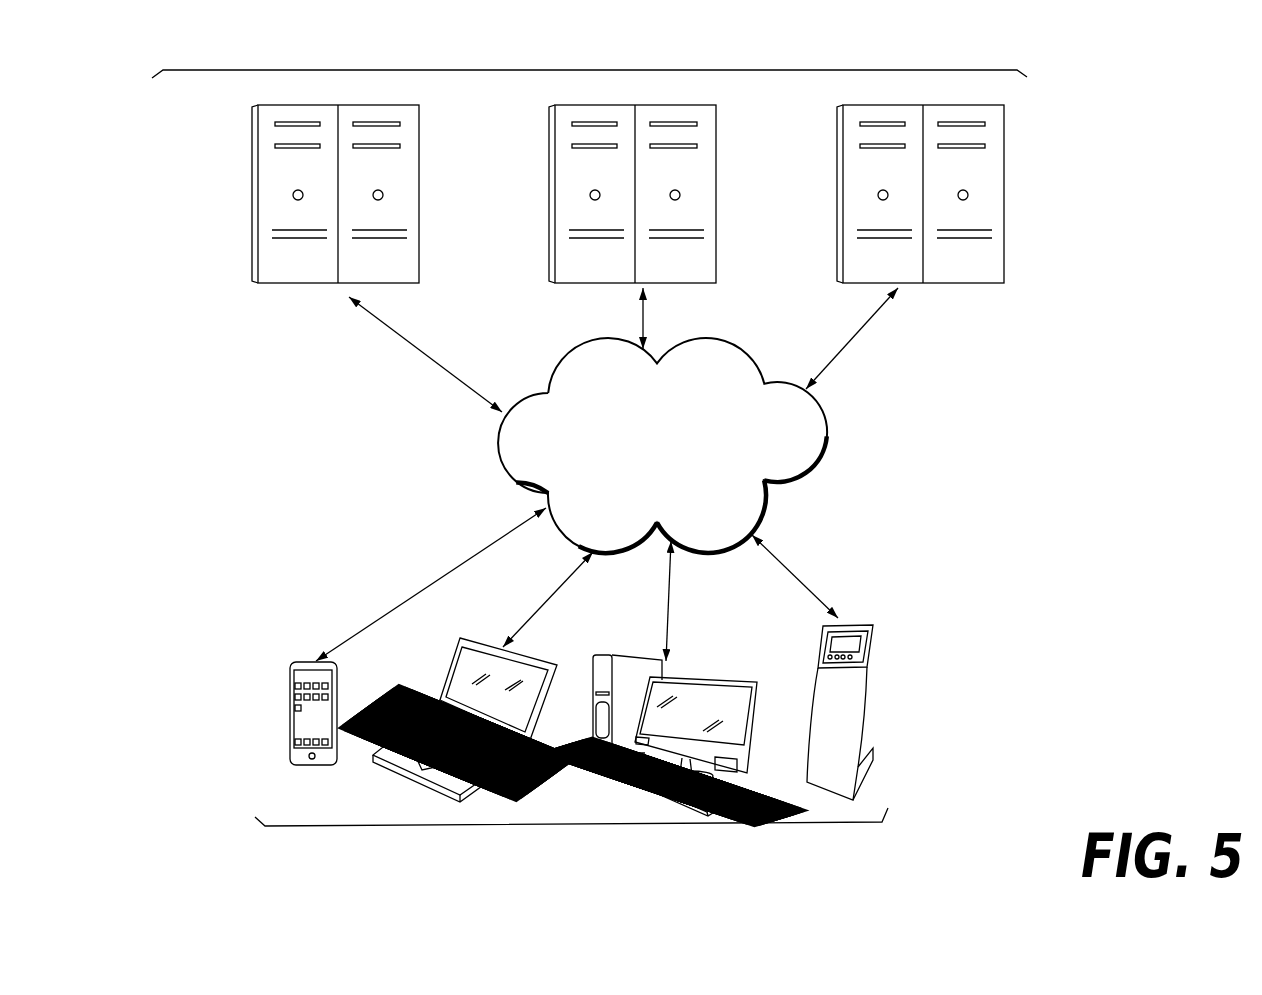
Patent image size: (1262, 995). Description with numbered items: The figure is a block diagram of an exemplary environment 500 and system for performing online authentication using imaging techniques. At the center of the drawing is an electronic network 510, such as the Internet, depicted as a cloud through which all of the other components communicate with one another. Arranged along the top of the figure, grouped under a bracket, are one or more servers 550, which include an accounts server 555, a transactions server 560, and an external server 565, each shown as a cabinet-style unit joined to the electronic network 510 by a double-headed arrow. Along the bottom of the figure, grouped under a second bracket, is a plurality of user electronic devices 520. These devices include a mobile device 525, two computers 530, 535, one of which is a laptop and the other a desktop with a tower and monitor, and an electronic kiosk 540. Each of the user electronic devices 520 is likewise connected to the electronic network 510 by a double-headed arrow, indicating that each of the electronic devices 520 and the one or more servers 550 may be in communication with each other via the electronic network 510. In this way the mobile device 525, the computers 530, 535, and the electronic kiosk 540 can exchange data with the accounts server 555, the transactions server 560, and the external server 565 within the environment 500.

The environment 500 is at (1138, 404).
The electronic network 510 is at (823, 457).
The user electronic devices 520 is at (590, 822).
The mobile device 525 is at (288, 720).
The computer 530 is at (448, 662).
The computer 535 is at (698, 678).
The electronic kiosk 540 is at (875, 653).
The servers 550 is at (591, 70).
The accounts server 555 is at (252, 133).
The transactions server 560 is at (548, 137).
The external server 565 is at (837, 123).